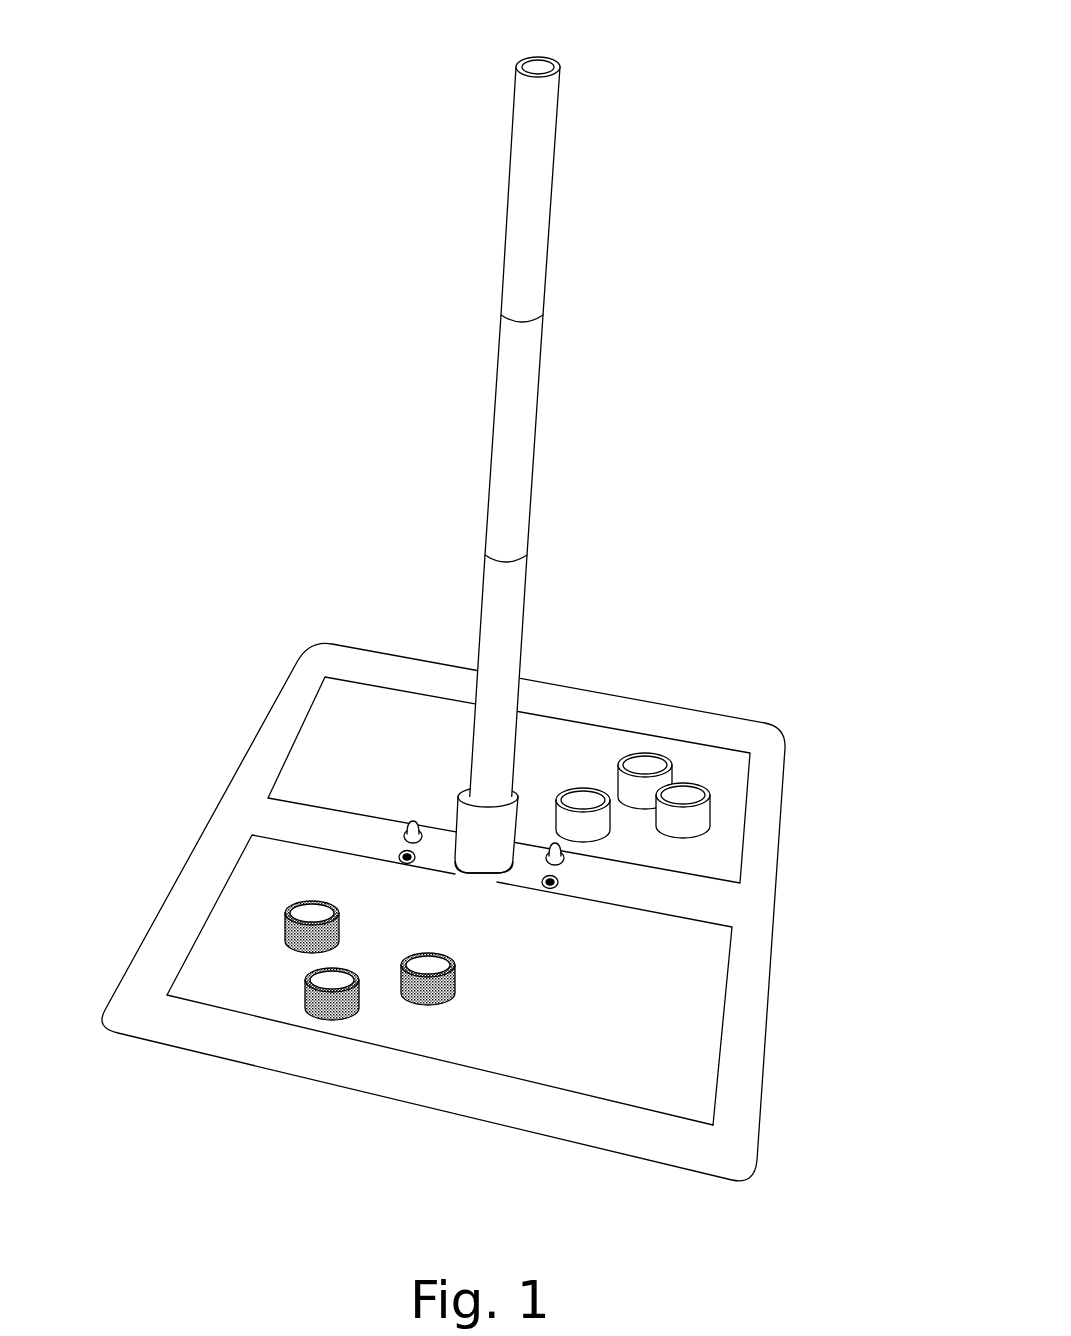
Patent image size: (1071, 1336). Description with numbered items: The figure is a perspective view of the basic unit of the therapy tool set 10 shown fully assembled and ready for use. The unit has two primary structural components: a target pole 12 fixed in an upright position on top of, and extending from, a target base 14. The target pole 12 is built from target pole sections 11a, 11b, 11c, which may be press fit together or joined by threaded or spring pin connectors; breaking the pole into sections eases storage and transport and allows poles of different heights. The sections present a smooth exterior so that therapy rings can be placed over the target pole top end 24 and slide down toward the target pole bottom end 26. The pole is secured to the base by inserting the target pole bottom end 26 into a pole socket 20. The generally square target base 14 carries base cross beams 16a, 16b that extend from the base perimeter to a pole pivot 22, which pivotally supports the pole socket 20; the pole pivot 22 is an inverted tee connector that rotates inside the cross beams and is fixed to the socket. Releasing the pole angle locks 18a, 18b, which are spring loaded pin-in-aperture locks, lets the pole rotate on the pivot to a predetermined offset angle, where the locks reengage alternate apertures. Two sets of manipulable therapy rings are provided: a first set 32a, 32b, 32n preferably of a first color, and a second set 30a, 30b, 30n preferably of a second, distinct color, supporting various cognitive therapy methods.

The therapy tool set 10 is at (489, 595).
The target pole 12 is at (520, 407).
The target pole section 11a is at (532, 617).
The target pole section 11b is at (541, 381).
The target pole section 11c is at (562, 136).
The target pole top end 24 is at (500, 80).
The target base 14 is at (412, 657).
The pole socket 20 is at (456, 815).
The base cross beam 16a is at (330, 843).
The base cross beam 16b is at (650, 903).
The target pole bottom end 26 is at (383, 784).
The pole pivot 22 is at (477, 886).
The pole angle lock 18a is at (386, 831).
The pole angle lock 18b is at (588, 857).
The therapy ring 30a is at (285, 928).
The therapy ring 30b is at (303, 992).
The therapy ring 30n is at (423, 1003).
The therapy ring 32a is at (587, 787).
The therapy ring 32b is at (650, 752).
The therapy ring 32n is at (712, 815).